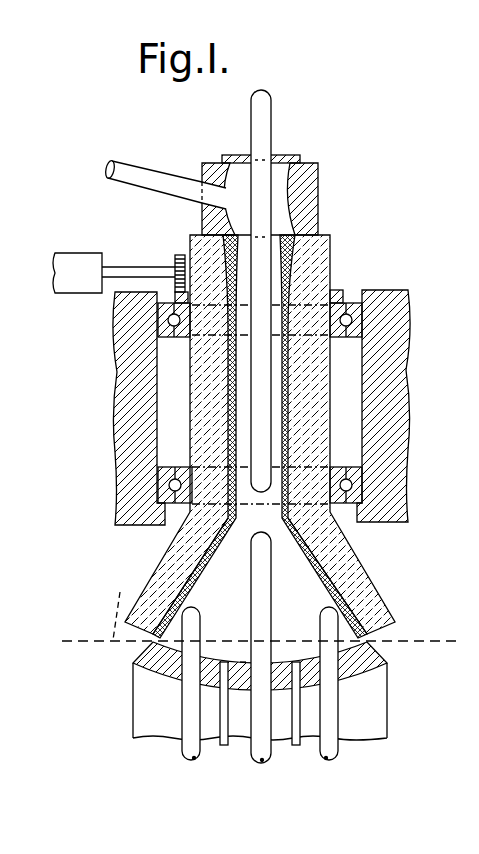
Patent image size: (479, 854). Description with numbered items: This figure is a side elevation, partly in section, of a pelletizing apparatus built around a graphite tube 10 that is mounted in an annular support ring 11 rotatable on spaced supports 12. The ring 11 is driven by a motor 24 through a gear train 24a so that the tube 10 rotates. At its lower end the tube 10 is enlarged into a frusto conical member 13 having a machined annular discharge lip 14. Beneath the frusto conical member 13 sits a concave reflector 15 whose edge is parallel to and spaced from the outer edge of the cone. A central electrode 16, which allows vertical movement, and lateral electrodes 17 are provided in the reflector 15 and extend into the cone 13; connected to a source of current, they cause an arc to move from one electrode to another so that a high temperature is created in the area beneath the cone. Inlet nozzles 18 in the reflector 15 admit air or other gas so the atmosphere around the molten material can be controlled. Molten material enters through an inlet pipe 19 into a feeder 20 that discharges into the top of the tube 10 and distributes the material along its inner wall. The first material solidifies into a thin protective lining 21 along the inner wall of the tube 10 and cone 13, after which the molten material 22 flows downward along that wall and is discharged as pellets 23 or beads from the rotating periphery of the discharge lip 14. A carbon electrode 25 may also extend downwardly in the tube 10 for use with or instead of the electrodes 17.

The graphite tube 10 is at (330, 255).
The annular support ring 11 is at (347, 303).
The spaced supports 12 is at (397, 378).
The frusto conical member 13 is at (357, 572).
The annular discharge lip 14 is at (370, 633).
The concave reflector 15 is at (238, 662).
The central electrode 16 is at (268, 614).
The lateral electrodes 17 is at (182, 752).
The inlet nozzles 18 is at (228, 740).
The inlet pipe 19 is at (159, 189).
The feeder 20 is at (292, 194).
The protective lining 21 is at (212, 528).
The molten material 22 is at (222, 552).
The pellets 23 is at (259, 610).
The motor 24 is at (177, 257).
The gear train 24a is at (98, 258).
The carbon electrode 25 is at (263, 118).